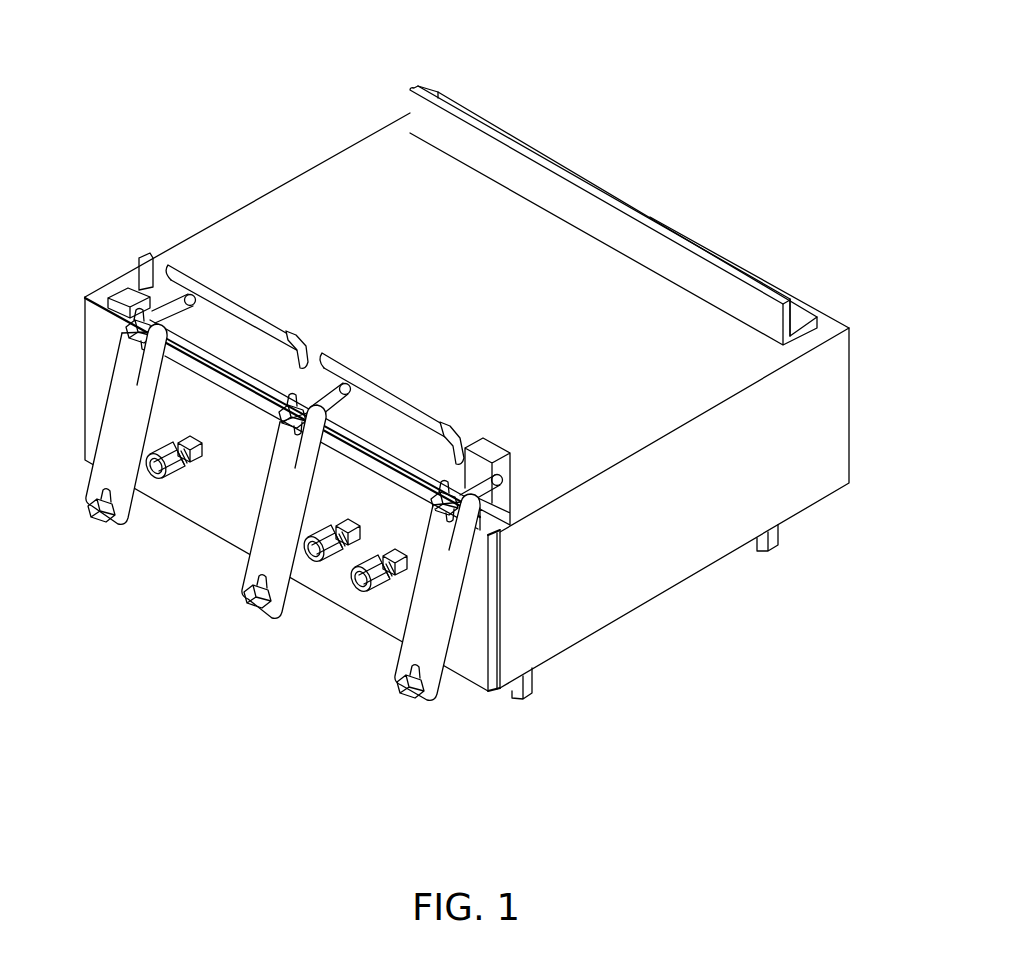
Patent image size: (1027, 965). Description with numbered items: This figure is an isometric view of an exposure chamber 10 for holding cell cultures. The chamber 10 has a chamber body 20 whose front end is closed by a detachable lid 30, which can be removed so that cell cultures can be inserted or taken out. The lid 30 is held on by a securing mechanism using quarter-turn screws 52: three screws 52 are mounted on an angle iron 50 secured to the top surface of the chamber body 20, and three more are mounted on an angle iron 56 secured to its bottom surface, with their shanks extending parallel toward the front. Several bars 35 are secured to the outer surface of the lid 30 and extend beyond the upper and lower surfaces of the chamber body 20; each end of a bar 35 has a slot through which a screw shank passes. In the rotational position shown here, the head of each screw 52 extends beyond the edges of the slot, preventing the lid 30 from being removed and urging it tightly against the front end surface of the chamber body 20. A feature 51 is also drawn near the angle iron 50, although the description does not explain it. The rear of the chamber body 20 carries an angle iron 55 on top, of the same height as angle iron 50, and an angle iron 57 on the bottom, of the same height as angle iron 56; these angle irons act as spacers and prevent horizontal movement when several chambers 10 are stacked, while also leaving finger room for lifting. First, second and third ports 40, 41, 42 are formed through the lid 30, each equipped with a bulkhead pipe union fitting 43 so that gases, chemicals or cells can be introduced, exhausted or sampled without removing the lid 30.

The exposure chamber 10 is at (183, 98).
The chamber body 20 is at (852, 428).
The lid 30 is at (493, 692).
The bar 35 is at (84, 482).
The first port 40 is at (170, 487).
The second port 41 is at (324, 583).
The third port 42 is at (379, 608).
The fitting 43 is at (165, 445).
The angle iron 50 is at (272, 320).
The hook 51 is at (311, 352).
The screw 52 is at (203, 318).
The angle iron 55 is at (409, 95).
The angle iron 56 is at (534, 692).
The angle iron 57 is at (780, 543).